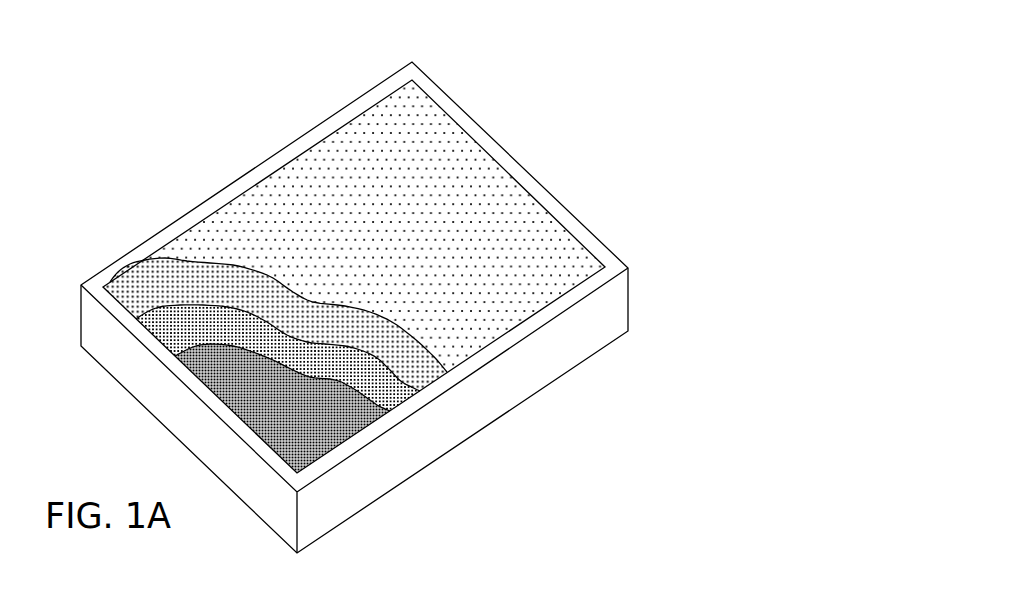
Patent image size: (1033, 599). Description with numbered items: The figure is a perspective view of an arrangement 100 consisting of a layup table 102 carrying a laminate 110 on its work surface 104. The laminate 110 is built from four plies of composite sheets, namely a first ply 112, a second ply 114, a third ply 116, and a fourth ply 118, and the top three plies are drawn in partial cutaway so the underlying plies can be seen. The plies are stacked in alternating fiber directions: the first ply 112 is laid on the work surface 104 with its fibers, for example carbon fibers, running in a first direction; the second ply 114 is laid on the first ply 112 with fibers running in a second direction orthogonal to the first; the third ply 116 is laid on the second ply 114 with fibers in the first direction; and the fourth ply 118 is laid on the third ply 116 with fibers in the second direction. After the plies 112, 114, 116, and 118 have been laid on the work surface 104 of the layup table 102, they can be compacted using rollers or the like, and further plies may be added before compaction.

The device assembly 100 is at (612, 65).
The layup table 102 is at (615, 308).
The work surface 104 is at (575, 228).
The laminate 110 is at (505, 167).
The first ply 112 is at (305, 433).
The second ply 114 is at (390, 370).
The third ply 116 is at (422, 367).
The fourth ply 118 is at (497, 315).